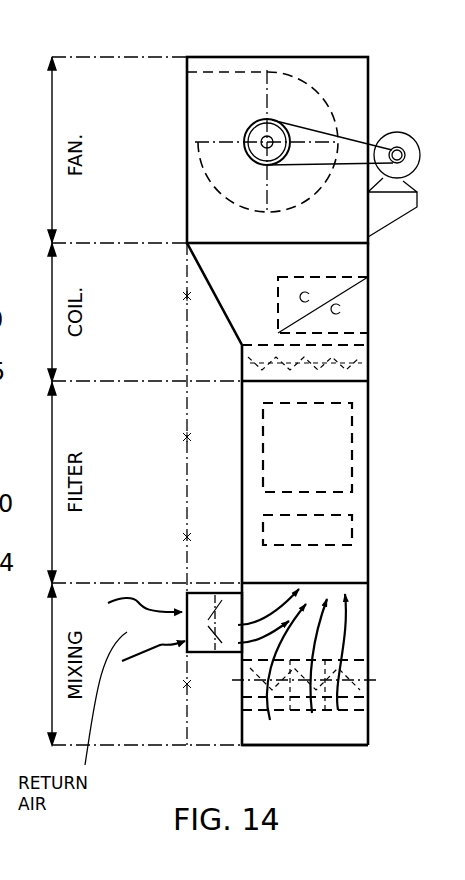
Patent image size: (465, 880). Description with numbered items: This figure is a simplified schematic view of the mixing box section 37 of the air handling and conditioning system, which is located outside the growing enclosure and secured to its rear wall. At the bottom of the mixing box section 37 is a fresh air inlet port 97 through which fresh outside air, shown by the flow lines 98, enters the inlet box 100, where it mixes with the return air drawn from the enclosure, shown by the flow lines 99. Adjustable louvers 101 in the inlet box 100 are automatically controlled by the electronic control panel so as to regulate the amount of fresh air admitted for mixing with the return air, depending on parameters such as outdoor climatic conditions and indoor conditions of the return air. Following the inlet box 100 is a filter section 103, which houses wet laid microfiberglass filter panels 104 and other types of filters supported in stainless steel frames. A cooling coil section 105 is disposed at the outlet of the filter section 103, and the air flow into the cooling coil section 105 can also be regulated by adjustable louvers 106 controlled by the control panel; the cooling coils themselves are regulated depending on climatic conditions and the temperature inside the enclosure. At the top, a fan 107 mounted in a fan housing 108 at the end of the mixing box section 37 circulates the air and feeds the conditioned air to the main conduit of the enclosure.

The mixing box section 37 is at (400, 330).
The fresh air inlet port 97 is at (323, 740).
The flow lines 98 is at (352, 628).
The flow lines 99 is at (262, 590).
The inlet box 100 is at (348, 594).
The adjustable louvers 101 is at (352, 681).
The filter section 103 is at (355, 489).
The wet laid microfiberglass filter panels 104 is at (352, 433).
The cooling coil section 105 is at (353, 307).
The adjustable louvers 106 is at (352, 377).
The fan 107 is at (313, 83).
The fan housing 108 is at (350, 108).